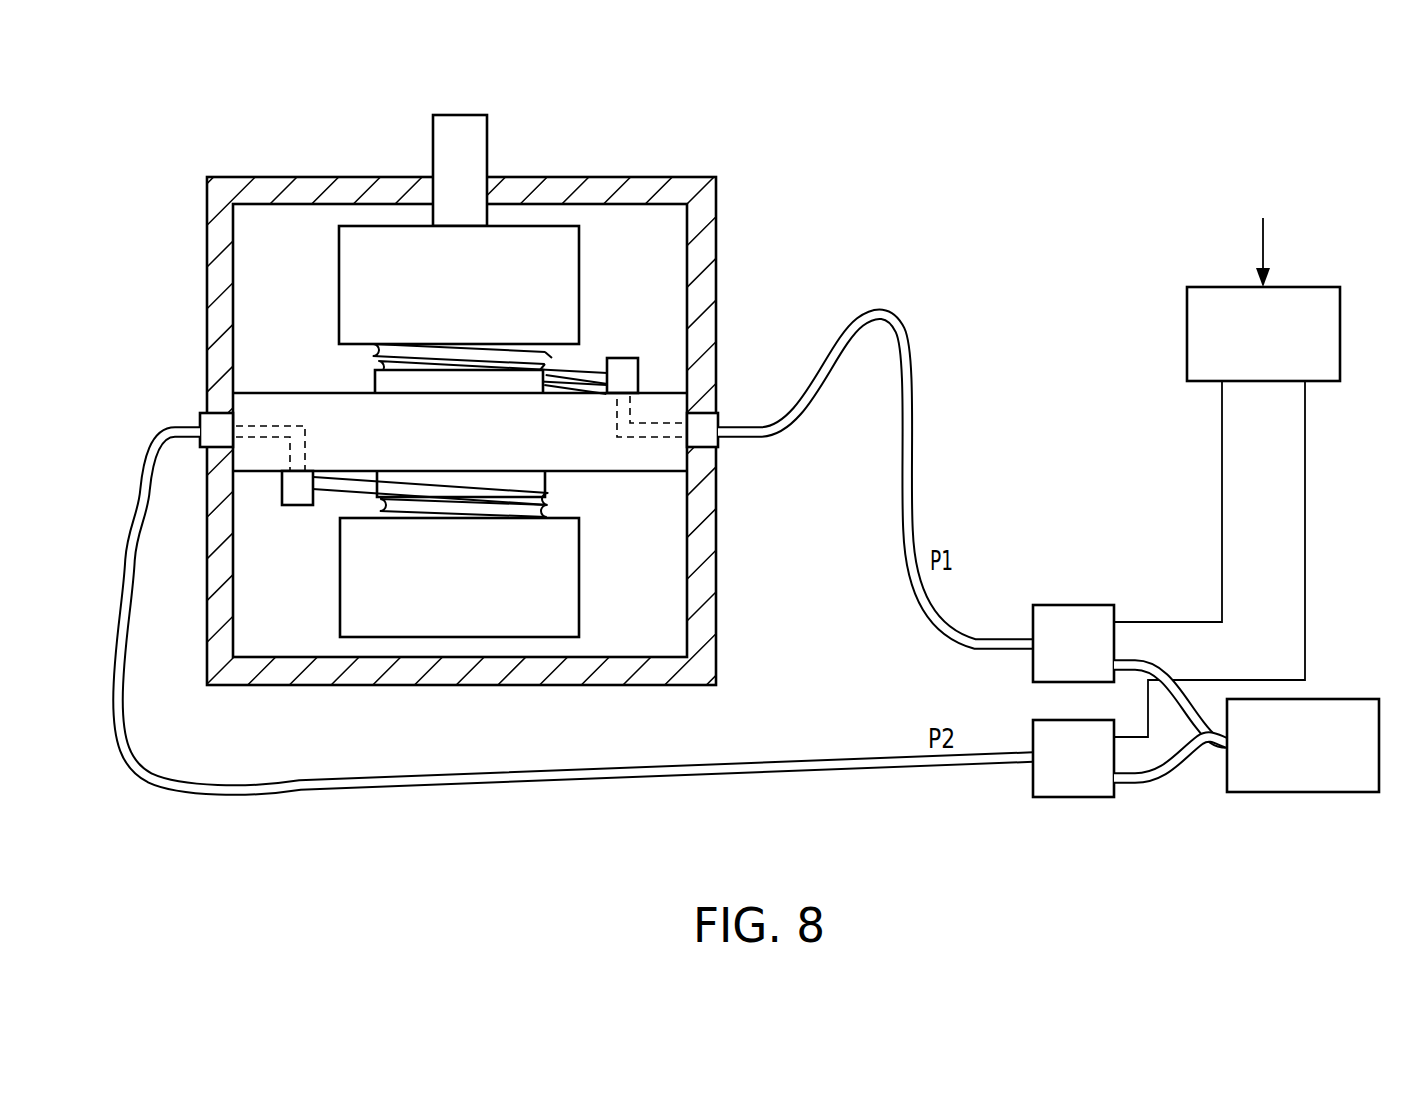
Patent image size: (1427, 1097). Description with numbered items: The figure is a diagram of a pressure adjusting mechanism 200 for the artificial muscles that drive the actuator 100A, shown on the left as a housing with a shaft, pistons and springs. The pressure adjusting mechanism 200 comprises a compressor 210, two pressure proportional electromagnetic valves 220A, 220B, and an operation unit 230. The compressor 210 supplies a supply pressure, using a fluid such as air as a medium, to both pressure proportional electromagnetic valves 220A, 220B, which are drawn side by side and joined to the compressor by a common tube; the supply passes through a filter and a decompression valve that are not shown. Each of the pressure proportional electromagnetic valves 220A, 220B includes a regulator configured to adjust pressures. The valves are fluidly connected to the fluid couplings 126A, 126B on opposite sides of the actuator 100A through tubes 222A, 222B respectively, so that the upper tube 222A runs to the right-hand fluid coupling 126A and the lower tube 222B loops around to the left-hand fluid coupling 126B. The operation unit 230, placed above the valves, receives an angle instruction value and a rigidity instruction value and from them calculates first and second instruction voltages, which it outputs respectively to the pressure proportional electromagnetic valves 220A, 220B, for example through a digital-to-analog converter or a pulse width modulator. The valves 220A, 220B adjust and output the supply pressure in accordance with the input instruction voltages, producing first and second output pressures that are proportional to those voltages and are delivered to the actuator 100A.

The actuator 100A is at (215, 147).
The fluid coupling 126A is at (718, 413).
The fluid coupling 126B is at (200, 413).
The tube 222A is at (913, 405).
The tube 222B is at (697, 780).
The pressure adjusting mechanism 200 is at (1055, 215).
The operation unit 230 is at (1207, 287).
The pressure proportional electromagnetic valve 220A is at (1075, 605).
The pressure proportional electromagnetic valve 220B is at (1075, 798).
The compressor 210 is at (1347, 699).